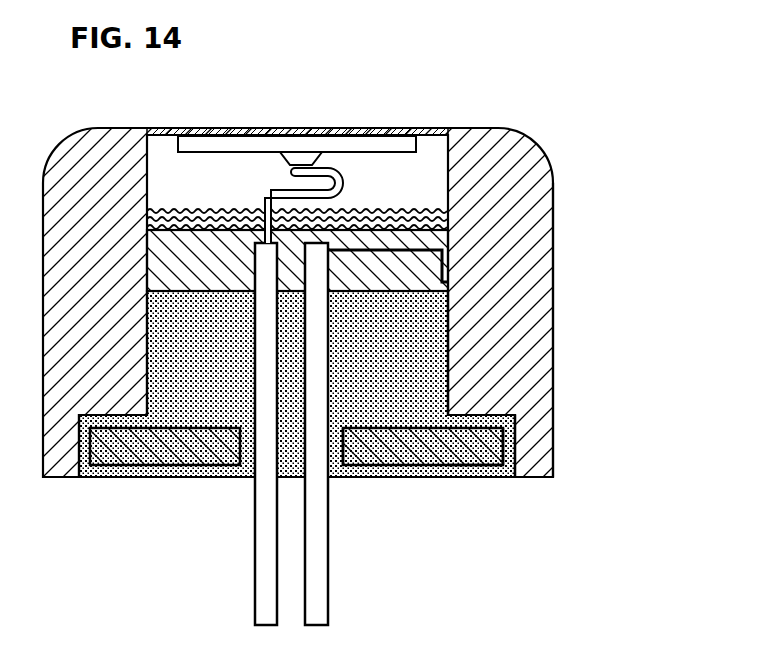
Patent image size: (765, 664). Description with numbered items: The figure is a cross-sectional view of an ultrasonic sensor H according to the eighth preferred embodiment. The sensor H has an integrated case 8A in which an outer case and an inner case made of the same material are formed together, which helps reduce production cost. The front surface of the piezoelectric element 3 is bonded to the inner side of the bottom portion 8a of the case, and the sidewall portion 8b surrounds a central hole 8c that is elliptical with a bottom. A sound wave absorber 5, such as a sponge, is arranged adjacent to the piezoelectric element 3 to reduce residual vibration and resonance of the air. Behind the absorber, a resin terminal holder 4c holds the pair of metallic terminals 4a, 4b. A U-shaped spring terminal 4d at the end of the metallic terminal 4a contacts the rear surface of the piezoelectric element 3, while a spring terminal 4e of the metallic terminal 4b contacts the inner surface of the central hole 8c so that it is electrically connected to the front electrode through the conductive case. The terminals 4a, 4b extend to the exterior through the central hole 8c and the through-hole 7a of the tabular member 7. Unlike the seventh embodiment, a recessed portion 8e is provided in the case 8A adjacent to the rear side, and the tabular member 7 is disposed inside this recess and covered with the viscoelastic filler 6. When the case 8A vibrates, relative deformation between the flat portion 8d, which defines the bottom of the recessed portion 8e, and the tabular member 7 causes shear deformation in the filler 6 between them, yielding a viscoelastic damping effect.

The ultrasonic sensor H is at (522, 124).
The integrated case 8A is at (554, 193).
The bottom portion 8a is at (383, 128).
The sidewall portion 8b is at (535, 313).
The central hole 8c is at (443, 382).
The flat portion 8d is at (466, 457).
The recessed portion 8e is at (510, 467).
The piezoelectric element 3 is at (267, 143).
The metallic terminal 4a is at (256, 580).
The metallic terminal 4b is at (318, 585).
The terminal holder 4c is at (175, 240).
The spring terminal 4d is at (338, 168).
The spring terminal 4e is at (432, 256).
The sound wave absorber 5 is at (217, 205).
The filler 6 is at (207, 405).
The tabular member 7 is at (390, 457).
The through-hole 7a is at (338, 478).